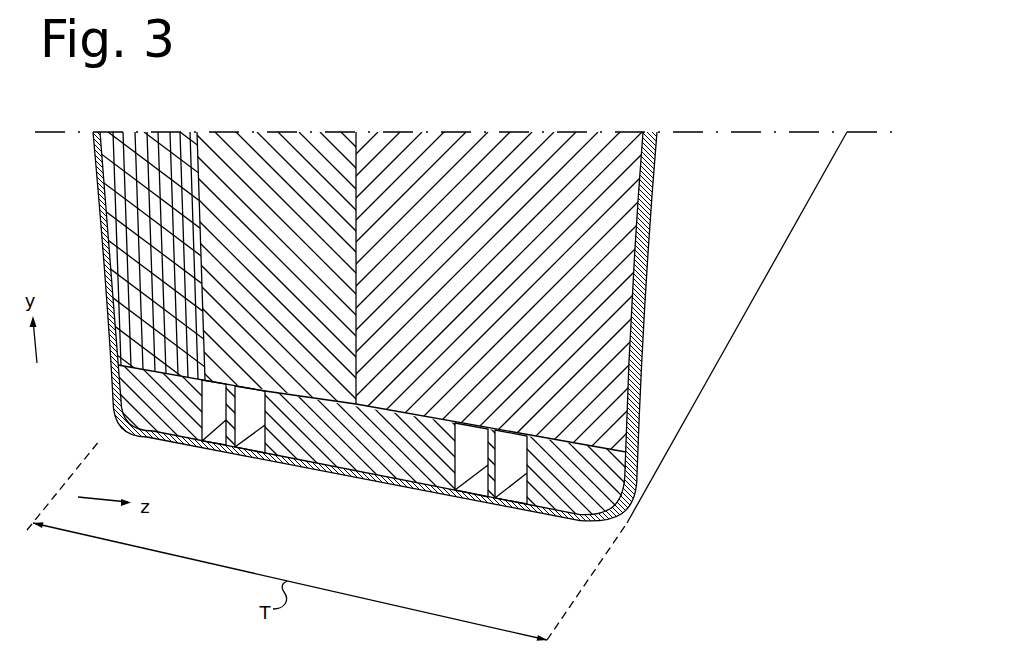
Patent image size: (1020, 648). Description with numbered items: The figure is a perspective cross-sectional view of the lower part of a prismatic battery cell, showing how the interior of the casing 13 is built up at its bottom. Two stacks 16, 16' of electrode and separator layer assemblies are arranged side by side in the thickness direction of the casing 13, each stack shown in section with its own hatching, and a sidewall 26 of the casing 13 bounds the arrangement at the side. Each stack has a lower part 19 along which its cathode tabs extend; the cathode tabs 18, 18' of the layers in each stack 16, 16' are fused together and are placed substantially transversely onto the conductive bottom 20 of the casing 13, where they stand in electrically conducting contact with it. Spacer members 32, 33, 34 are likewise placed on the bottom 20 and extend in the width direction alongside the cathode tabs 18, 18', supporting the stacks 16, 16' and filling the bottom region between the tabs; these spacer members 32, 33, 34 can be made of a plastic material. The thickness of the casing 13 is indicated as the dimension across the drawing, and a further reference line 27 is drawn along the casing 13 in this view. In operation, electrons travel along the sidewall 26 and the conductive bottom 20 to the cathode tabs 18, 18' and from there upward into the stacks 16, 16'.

The casing 13 is at (766, 108).
The stack 16 is at (320, 231).
The stack 16' is at (489, 253).
The cathode tabs 18 is at (228, 447).
The cathode tabs 18' is at (491, 512).
The lower part 19 is at (607, 387).
The conductive bottom 20 is at (330, 466).
The sidewall 26 is at (100, 240).
The housing edge 27 is at (720, 318).
The spacer member 32 is at (122, 371).
The spacer member 33 is at (405, 457).
The spacer member 34 is at (637, 498).